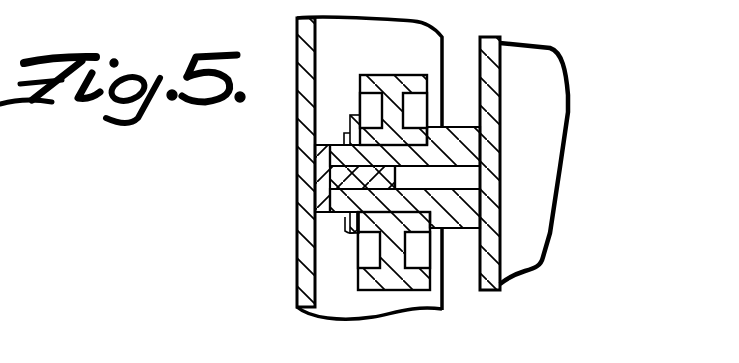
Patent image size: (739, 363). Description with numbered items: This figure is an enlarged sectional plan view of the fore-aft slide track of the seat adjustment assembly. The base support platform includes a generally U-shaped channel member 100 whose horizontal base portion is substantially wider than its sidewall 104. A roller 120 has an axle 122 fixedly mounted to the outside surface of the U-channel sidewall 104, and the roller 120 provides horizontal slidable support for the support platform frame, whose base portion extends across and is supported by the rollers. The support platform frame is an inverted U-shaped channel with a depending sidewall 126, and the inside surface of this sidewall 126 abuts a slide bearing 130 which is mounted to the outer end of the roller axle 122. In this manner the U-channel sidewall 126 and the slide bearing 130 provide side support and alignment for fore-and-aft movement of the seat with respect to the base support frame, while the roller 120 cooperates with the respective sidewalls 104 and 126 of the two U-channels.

The U-shaped channel member 100 is at (303, 277).
The sidewall 104 is at (497, 178).
The roller 120 is at (417, 75).
The axle 122 is at (470, 137).
The depending sidewall 126 is at (300, 186).
The slide bearing 130 is at (323, 142).